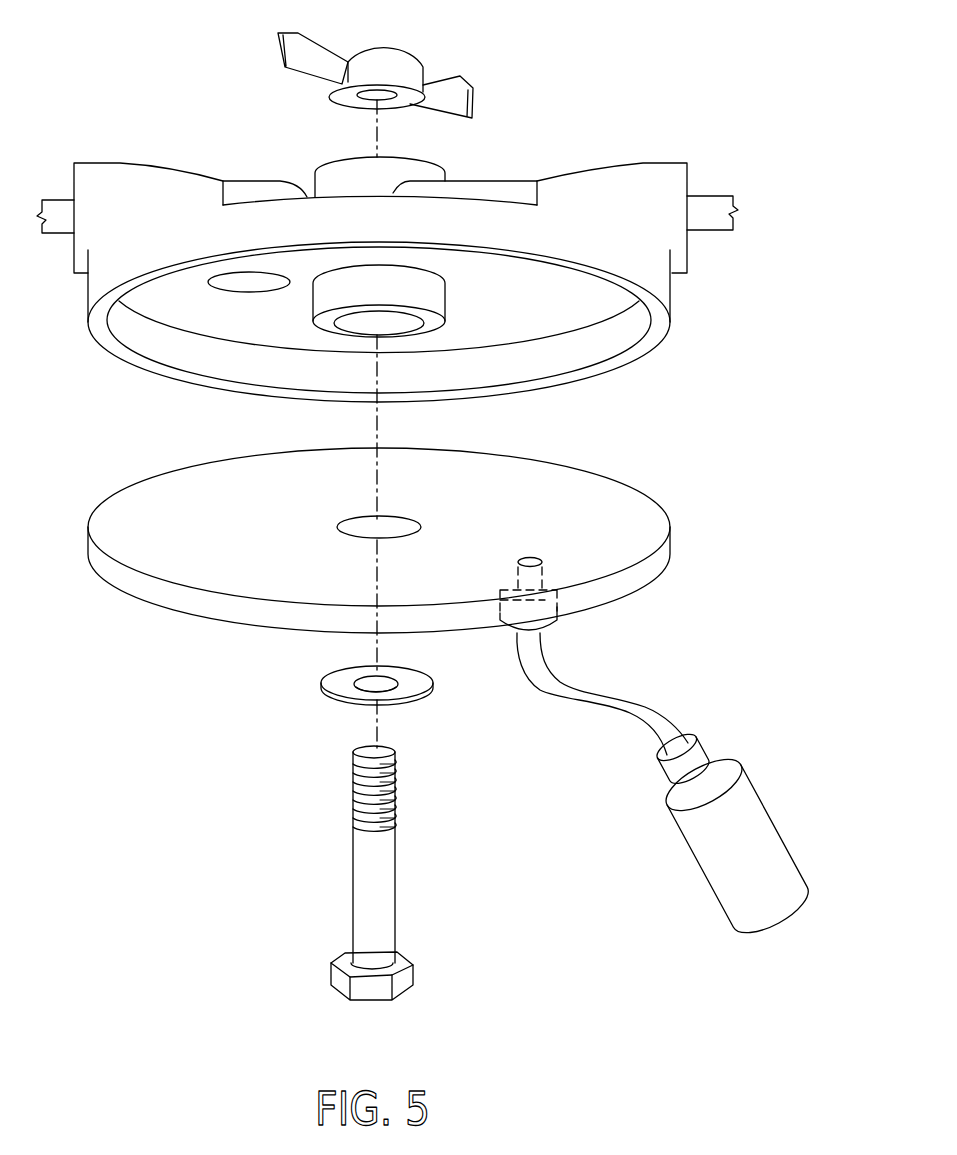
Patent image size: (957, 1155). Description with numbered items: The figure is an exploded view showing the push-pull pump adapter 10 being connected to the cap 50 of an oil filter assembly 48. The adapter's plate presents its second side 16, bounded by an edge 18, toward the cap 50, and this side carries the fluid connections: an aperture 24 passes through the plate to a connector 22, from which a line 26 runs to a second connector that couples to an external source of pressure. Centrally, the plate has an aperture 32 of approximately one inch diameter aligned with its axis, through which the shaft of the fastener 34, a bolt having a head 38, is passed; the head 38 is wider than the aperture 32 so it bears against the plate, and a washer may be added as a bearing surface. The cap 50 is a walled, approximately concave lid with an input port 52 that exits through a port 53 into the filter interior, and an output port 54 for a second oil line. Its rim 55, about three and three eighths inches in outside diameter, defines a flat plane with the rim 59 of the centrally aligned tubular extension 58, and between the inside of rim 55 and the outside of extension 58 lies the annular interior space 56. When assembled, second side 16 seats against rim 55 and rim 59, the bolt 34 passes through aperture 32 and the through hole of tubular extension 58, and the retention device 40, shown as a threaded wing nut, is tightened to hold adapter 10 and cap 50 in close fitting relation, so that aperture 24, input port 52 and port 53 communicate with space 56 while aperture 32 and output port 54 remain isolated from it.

The push-pull pump adapter 10 is at (643, 480).
The second side 16 is at (153, 498).
The edge 18 is at (132, 587).
The connector 22 is at (557, 620).
The aperture 24 is at (533, 558).
The line 26 is at (597, 720).
The aperture 32 is at (355, 517).
The fastener 34 is at (401, 881).
The head 38 is at (403, 955).
The retention device 40 is at (407, 52).
The oil filter assembly 48 is at (585, 87).
The cap 50 is at (473, 181).
The input port 52 is at (74, 200).
The port 53 is at (242, 292).
The output port 54 is at (687, 195).
The rim 55 is at (660, 328).
The interior space 56 is at (556, 299).
The tubular extension 58 is at (447, 303).
The rim 59 is at (433, 328).